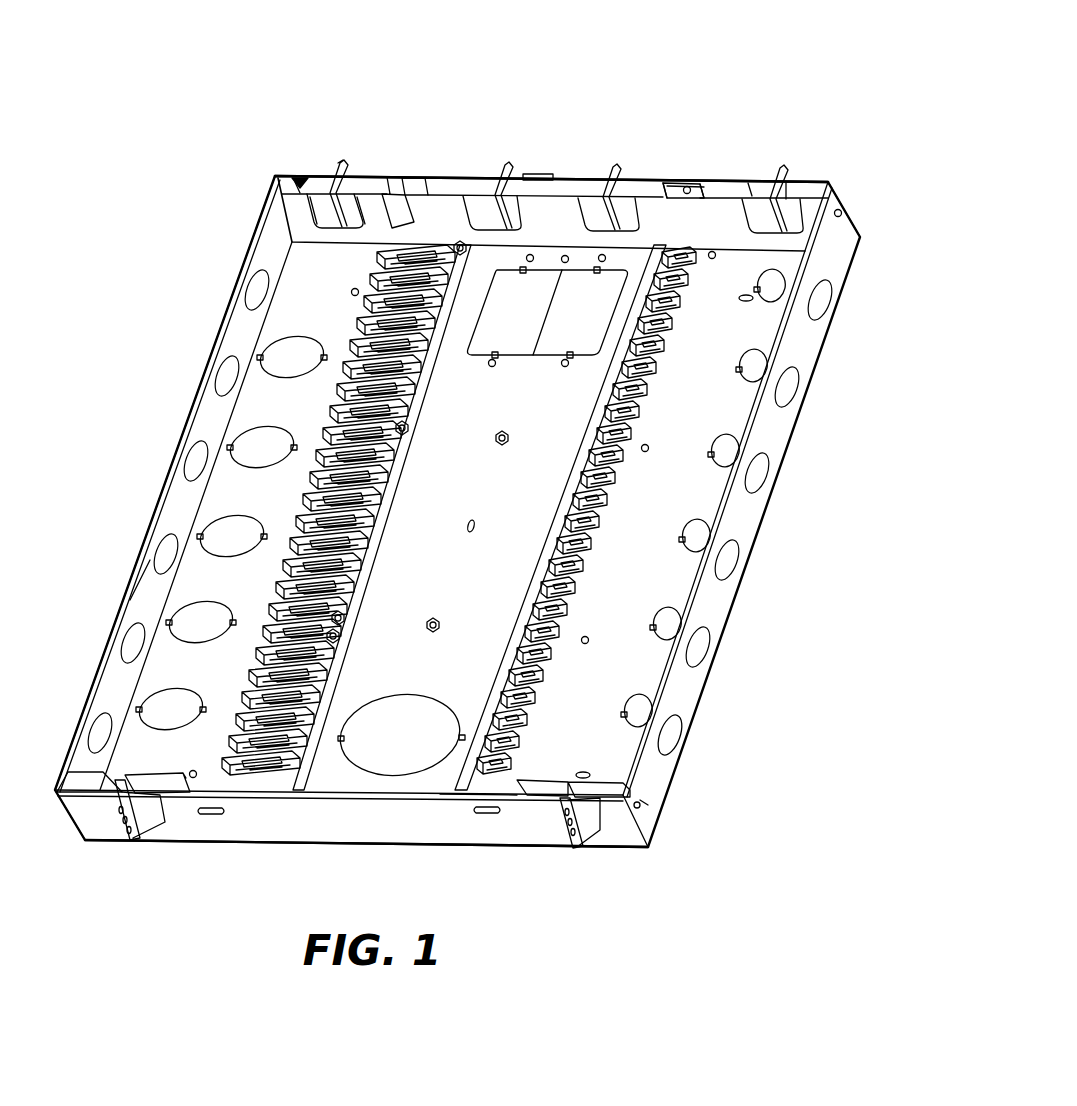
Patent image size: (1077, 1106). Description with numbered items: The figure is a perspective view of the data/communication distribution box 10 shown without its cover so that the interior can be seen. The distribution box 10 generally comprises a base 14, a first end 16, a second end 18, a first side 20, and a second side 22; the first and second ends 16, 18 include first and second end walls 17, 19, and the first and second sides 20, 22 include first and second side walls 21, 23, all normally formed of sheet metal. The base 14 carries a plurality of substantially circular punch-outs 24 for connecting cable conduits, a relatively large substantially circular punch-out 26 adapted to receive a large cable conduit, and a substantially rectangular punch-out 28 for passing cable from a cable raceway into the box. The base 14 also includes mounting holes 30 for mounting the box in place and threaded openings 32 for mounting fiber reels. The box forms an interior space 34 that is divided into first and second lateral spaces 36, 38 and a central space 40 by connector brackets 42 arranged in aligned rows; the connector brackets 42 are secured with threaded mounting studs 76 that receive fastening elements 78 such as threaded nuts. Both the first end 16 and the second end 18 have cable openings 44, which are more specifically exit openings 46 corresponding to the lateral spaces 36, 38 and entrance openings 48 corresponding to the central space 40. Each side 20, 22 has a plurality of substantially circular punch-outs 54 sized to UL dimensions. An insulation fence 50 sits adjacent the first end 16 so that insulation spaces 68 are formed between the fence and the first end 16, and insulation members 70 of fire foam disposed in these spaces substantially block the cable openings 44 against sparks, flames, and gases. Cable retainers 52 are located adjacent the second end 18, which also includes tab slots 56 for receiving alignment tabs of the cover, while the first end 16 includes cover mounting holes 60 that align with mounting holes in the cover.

The data/communication distribution box 10 is at (683, 62).
The base 14 is at (484, 494).
The first end 16 is at (450, 152).
The first end wall 17 is at (540, 176).
The second end 18 is at (300, 856).
The second end wall 19 is at (388, 826).
The first side 20 is at (138, 474).
The first side wall 21 is at (122, 569).
The second side 22 is at (765, 539).
The second side wall 23 is at (724, 622).
The substantially circular punch-outs 24 is at (280, 336).
The relatively large substantially circular punch-out 26 is at (372, 694).
The substantially rectangular punch-out 28 is at (521, 366).
The mounting holes 30 is at (561, 254).
The threaded openings 32 is at (443, 622).
The interior space 34 is at (300, 263).
The first lateral space 36 is at (140, 751).
The second lateral space 38 is at (640, 689).
The central space 40 is at (454, 782).
The connector brackets 42 is at (399, 541).
The cable openings 44 is at (346, 162).
The exit openings 46 is at (317, 166).
The entrance openings 48 is at (497, 240).
The insulation fence 50 is at (300, 224).
The cable retainers 52 is at (172, 766).
The substantially circular punch-outs 54 is at (794, 380).
The tab slots 56 is at (210, 815).
The cover mounting holes 60 is at (688, 184).
The insulation spaces 68 is at (790, 183).
The insulation members 70 is at (372, 186).
The threaded mounting studs 76 is at (322, 618).
The fastening elements 78 is at (414, 429).